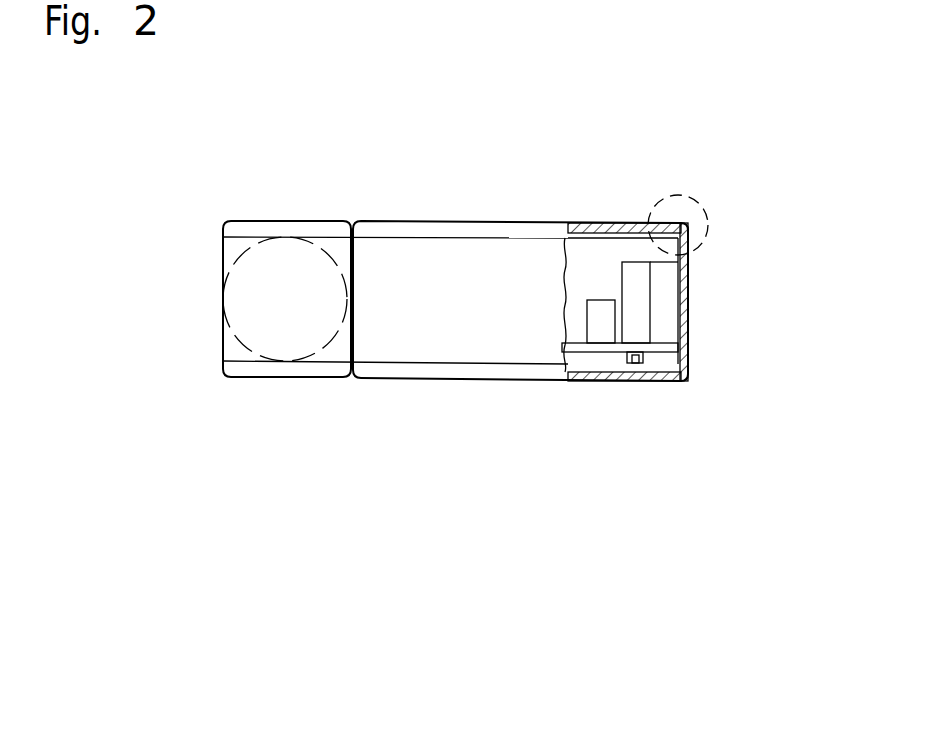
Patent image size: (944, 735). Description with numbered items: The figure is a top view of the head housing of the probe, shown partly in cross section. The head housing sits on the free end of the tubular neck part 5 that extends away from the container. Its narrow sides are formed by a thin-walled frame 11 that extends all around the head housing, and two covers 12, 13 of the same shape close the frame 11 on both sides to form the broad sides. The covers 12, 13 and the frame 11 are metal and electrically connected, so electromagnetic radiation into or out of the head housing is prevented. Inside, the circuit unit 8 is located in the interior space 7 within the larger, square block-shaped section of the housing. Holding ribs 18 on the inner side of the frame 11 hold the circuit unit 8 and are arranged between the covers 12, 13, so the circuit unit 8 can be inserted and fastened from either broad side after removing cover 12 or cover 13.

The tubular neck part 5 is at (328, 350).
The interior space 7 is at (605, 273).
The circuit unit 8 is at (585, 347).
The thin-walled frame 11 is at (688, 355).
The cover 12 is at (422, 370).
The cover 13 is at (387, 222).
The holding ribs 18 is at (663, 320).